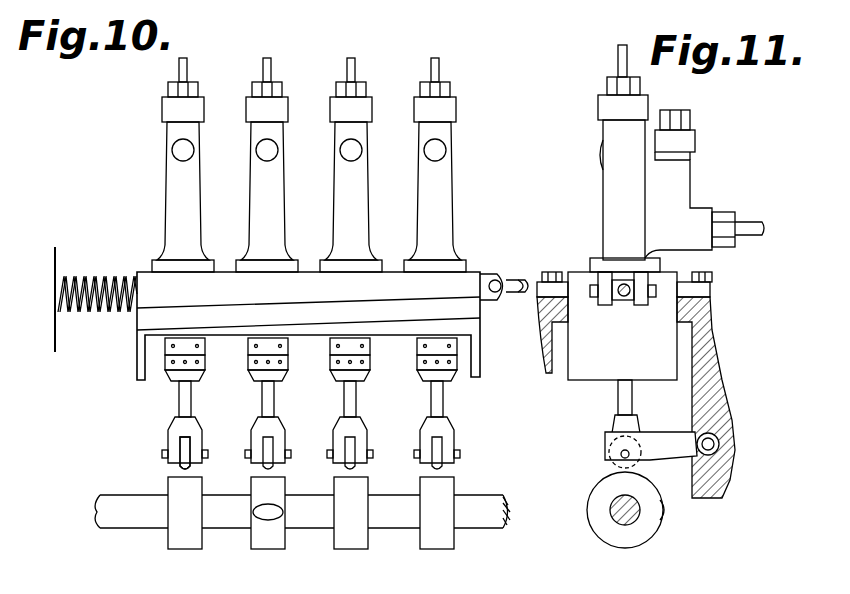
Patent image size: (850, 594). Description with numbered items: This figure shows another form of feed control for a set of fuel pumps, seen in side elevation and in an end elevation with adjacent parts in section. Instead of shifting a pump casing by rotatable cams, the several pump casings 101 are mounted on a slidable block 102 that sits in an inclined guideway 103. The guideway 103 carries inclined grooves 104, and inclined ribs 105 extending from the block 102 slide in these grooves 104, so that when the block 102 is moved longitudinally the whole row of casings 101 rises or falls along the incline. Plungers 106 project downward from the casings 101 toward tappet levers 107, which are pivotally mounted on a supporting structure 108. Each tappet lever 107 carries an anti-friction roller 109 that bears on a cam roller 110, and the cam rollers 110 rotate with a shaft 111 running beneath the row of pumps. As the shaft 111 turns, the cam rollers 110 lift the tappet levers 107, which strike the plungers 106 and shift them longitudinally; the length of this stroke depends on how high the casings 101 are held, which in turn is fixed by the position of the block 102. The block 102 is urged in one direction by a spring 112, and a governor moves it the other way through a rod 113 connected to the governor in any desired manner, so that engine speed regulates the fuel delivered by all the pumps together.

In FIG. 10, the pump casing 101 is at (442, 195).
In FIG. 11, the pump casing 101 is at (677, 223).
In FIG. 10, the slidable block 102 is at (330, 326).
In FIG. 11, the slidable block 102 is at (657, 348).
In FIG. 11, the inclined guideway 103 is at (703, 318).
In FIG. 11, the inclined grooves 104 is at (546, 338).
In FIG. 10, the inclined ribs 105 is at (460, 297).
In FIG. 11, the inclined ribs 105 is at (683, 308).
In FIG. 10, the plungers 106 is at (445, 400).
In FIG. 11, the plungers 106 is at (618, 400).
In FIG. 10, the tappet levers 107 is at (455, 452).
In FIG. 11, the tappet levers 107 is at (605, 445).
In FIG. 11, the supporting structure 108 is at (714, 440).
In FIG. 10, the anti-friction roller 109 is at (182, 468).
In FIG. 11, the anti-friction roller 109 is at (612, 465).
In FIG. 10, the cam roller 110 is at (180, 537).
In FIG. 11, the cam roller 110 is at (630, 543).
In FIG. 10, the shaft 111 is at (480, 524).
In FIG. 11, the shaft 111 is at (618, 515).
In FIG. 10, the spring 112 is at (95, 315).
In FIG. 10, the rod 113 is at (523, 278).